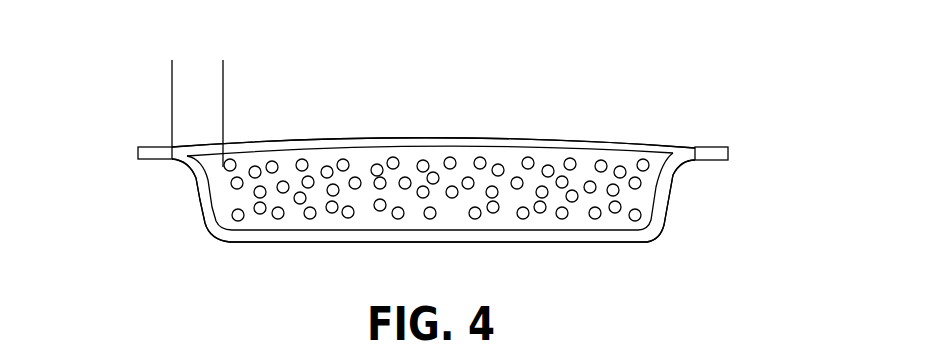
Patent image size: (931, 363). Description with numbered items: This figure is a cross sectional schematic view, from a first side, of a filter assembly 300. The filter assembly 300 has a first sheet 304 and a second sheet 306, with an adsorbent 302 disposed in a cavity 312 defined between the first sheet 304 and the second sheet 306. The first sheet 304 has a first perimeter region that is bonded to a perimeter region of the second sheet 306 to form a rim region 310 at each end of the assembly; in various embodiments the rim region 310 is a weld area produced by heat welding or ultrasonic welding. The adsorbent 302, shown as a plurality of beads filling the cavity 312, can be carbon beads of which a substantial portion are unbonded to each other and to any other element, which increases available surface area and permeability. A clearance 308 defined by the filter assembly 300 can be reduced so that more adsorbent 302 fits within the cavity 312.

The filter assembly 300 is at (507, 68).
The adsorbent 302 is at (424, 160).
The first sheet 304 is at (676, 205).
The second sheet 306 is at (553, 132).
The clearance 308 is at (250, 90).
The rim region 310 is at (155, 173).
The cavity 312 is at (215, 190).